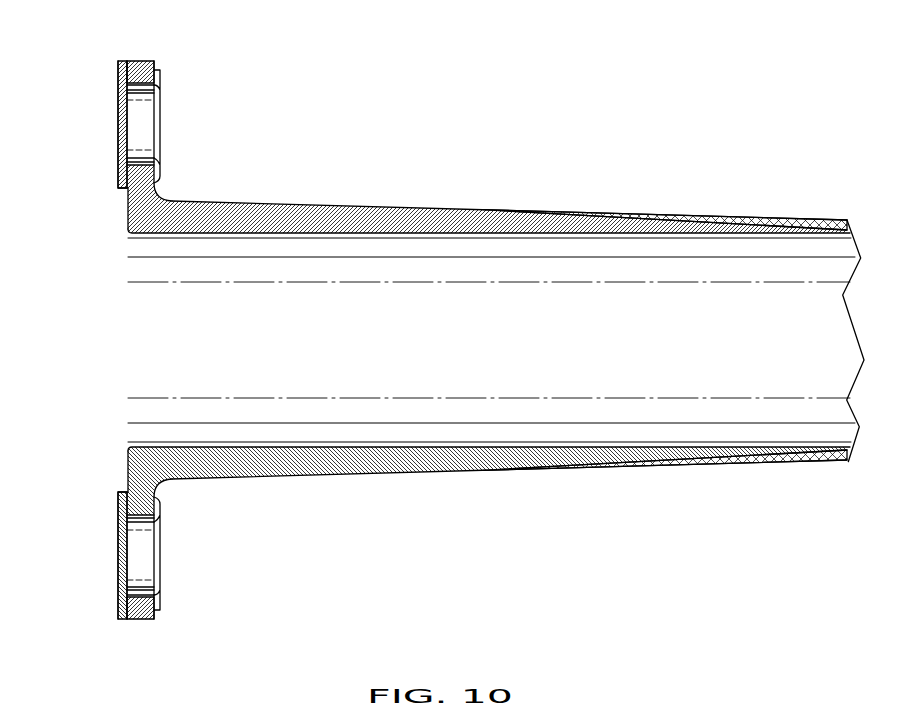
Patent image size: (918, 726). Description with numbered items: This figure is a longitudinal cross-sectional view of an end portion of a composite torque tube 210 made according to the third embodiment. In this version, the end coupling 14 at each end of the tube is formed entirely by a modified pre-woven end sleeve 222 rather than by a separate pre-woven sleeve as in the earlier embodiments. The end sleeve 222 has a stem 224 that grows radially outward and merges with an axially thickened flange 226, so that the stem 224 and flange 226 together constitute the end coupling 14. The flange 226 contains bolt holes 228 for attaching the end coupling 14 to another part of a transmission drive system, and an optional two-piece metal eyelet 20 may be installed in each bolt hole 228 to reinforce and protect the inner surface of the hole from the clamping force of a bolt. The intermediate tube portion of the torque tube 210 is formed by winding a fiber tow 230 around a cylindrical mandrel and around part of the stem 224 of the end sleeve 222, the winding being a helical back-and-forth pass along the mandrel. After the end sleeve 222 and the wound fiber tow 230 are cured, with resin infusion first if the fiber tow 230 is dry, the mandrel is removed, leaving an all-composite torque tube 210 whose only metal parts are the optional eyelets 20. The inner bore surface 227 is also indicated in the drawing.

The torque tube 210 is at (652, 68).
The end coupling 14 is at (297, 125).
The metal eyelet 20 is at (160, 88).
The end sleeve 222 is at (112, 220).
The stem 224 is at (497, 228).
The flange 226 is at (140, 72).
The inner bore surface 227 is at (281, 234).
The bolt hole 228 is at (137, 92).
The fiber tow 230 is at (775, 219).